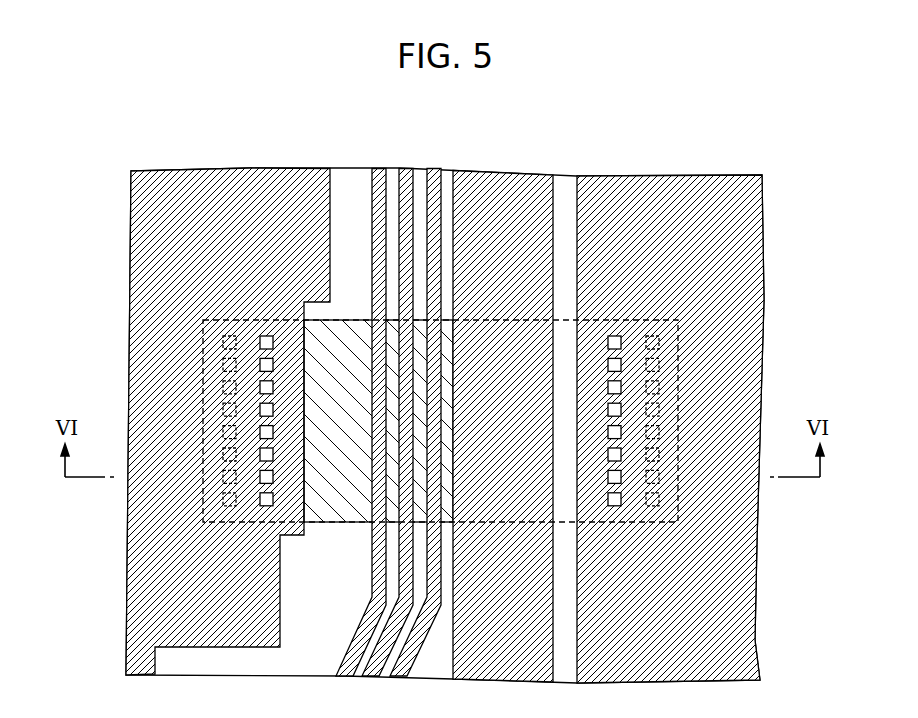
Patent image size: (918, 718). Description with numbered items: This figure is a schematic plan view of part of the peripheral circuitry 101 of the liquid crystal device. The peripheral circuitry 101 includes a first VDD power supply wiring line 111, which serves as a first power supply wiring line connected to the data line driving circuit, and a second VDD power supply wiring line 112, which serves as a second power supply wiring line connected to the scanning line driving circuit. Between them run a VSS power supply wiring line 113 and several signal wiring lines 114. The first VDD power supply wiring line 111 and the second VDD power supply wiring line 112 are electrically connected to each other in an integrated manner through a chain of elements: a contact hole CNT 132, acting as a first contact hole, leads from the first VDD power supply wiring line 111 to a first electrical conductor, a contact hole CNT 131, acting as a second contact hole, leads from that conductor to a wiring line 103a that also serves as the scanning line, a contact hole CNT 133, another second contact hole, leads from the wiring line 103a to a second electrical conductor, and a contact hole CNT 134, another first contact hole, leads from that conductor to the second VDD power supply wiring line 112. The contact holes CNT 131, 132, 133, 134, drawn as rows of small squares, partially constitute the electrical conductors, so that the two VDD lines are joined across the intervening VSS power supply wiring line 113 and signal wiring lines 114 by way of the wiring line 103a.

The peripheral circuitry 101 is at (758, 121).
The first VDD power supply wiring line 111 is at (166, 170).
The second VDD power supply wiring line 112 is at (722, 182).
The VSS power supply wiring line 113 is at (511, 180).
The signal wiring lines 114 is at (434, 168).
The wiring line 103a is at (348, 330).
The contact hole CNT 131 is at (229, 334).
The contact hole CNT 132 is at (266, 335).
The contact hole CNT 133 is at (654, 335).
The contact hole CNT 134 is at (615, 335).